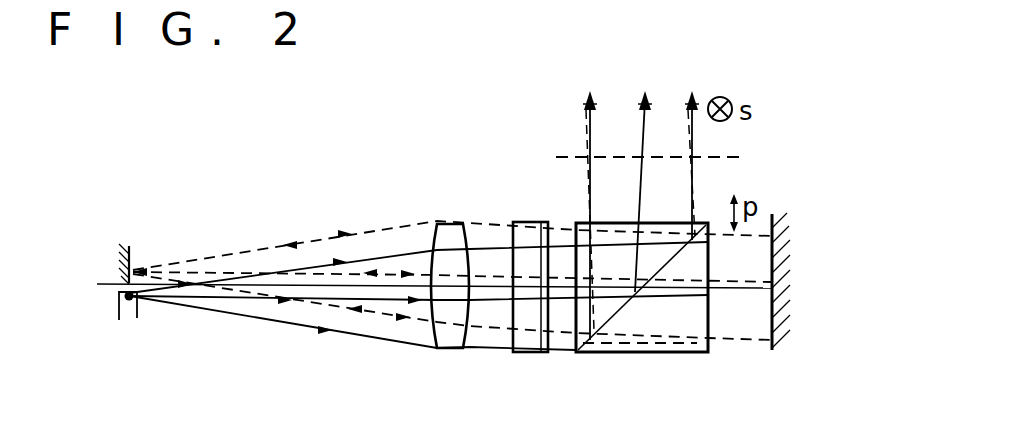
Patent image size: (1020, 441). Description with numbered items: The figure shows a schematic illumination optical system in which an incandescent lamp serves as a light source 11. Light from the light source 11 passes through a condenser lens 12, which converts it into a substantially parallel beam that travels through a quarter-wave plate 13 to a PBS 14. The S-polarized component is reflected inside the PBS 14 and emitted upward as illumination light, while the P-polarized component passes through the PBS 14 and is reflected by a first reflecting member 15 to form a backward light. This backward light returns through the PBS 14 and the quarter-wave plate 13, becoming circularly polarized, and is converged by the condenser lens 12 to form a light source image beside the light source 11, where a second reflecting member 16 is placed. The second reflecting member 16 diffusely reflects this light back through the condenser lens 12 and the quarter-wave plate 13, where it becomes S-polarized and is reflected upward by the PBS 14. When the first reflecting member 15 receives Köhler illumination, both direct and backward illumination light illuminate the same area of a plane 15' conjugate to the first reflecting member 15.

The light source 11 is at (131, 322).
The condenser lens 12 is at (440, 353).
The quarter-wave plate 13 is at (532, 353).
The PBS 14 is at (652, 353).
The first reflecting member 15 is at (741, 316).
The plane conjugate to the first reflecting member 15' is at (674, 158).
The second reflecting member 16 is at (135, 247).